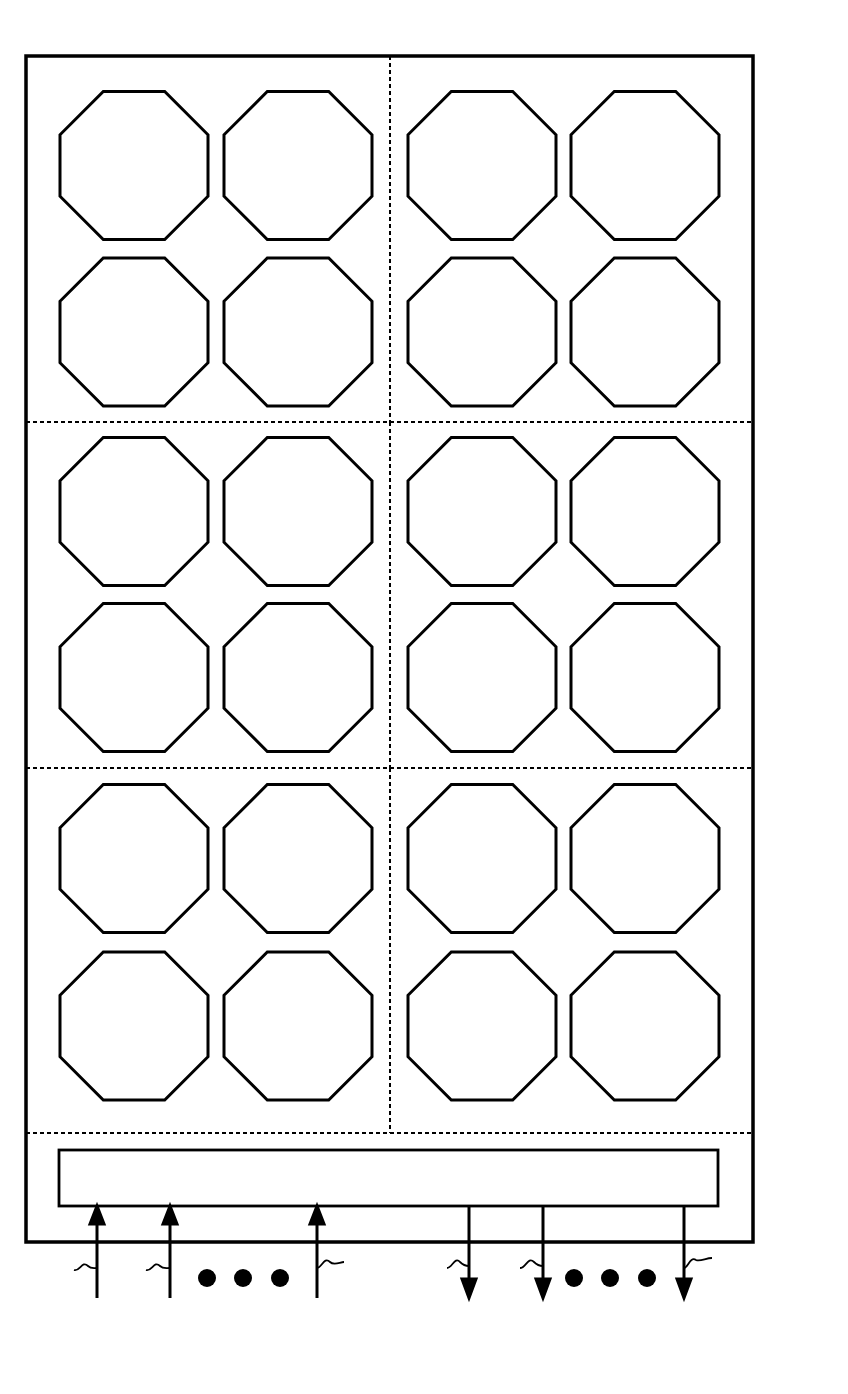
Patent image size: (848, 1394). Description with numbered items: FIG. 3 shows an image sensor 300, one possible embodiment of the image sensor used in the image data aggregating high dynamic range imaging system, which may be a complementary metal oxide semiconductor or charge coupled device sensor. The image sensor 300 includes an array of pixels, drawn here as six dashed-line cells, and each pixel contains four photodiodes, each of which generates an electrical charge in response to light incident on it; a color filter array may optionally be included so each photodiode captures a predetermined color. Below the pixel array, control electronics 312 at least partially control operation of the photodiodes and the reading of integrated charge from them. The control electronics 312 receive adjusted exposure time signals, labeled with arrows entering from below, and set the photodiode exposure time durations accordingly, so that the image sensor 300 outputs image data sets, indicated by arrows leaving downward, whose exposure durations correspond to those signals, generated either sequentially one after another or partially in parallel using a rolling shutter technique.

The image sensor 300 is at (709, 56).
The control electronics 312 is at (709, 1188).